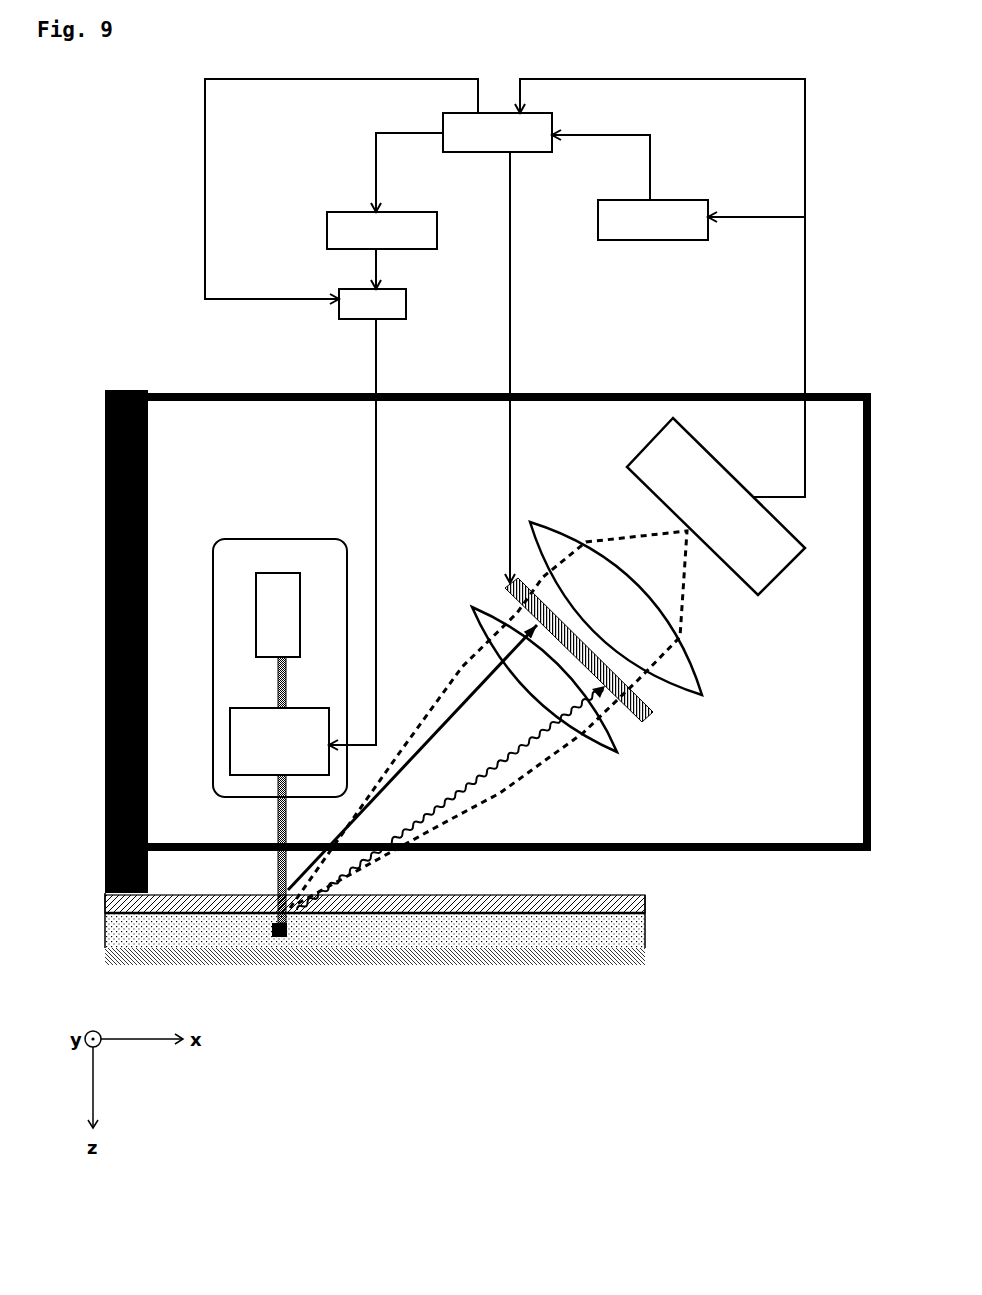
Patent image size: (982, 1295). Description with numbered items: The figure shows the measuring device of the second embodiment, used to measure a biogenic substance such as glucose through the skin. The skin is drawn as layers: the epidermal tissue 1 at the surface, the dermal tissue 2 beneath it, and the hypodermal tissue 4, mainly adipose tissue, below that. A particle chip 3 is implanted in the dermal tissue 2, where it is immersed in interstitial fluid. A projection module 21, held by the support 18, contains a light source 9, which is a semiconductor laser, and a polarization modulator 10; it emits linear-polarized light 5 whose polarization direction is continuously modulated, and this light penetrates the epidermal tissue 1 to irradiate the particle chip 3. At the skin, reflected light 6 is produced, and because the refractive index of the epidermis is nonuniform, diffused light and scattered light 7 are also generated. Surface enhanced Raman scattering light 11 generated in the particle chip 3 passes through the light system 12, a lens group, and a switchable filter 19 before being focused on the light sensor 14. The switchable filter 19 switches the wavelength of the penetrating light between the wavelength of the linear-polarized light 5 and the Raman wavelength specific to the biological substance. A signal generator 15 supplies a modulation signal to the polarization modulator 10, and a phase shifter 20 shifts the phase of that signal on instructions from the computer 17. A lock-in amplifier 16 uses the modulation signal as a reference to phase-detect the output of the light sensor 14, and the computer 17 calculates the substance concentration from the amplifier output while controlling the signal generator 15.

The epidermal tissue 1 is at (630, 903).
The dermal tissue 2 is at (632, 933).
The particle chip 3 is at (280, 940).
The hypodermal tissue 4 is at (630, 957).
The linear-polarized light 5 is at (278, 840).
The reflected light 6 is at (403, 772).
The diffused light and scattered light 7 is at (528, 733).
The light source 9 is at (270, 637).
The polarization modulator 10 is at (247, 735).
The surface enhanced Raman scattering light 11 is at (645, 535).
The light system 12 is at (545, 550).
The light sensor 14 is at (660, 472).
The signal generator 15 is at (357, 228).
The lock-in amplifier 16 is at (675, 222).
The computer 17 is at (482, 145).
The support 18 is at (733, 851).
The switchable filter 19 is at (642, 722).
The phase shifter 20 is at (360, 312).
The projection module 21 is at (280, 538).